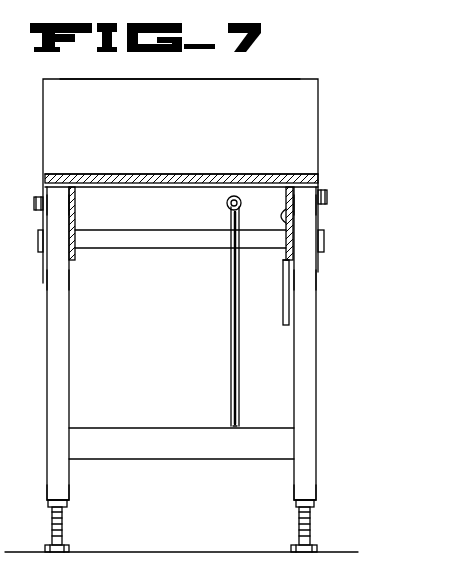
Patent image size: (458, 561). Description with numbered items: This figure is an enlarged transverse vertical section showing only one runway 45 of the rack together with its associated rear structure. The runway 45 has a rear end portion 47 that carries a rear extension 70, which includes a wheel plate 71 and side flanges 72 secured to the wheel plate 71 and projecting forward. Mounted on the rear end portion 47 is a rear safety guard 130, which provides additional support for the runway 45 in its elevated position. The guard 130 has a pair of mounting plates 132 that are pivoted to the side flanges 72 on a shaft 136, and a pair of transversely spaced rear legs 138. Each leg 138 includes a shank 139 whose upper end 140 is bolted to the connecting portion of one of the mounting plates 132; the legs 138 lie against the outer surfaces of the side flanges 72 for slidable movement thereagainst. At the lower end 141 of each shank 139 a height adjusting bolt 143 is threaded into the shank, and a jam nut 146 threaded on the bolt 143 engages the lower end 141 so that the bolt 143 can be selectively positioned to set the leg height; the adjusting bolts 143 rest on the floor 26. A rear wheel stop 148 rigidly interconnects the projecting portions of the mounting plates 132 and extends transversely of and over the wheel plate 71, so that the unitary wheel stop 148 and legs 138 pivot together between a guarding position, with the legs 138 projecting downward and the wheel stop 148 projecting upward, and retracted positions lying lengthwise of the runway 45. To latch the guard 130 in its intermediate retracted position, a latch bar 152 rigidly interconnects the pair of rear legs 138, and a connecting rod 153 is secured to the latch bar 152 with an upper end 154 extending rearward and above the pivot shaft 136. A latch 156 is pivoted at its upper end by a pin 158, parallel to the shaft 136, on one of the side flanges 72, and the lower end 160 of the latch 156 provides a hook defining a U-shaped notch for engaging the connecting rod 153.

The rear safety guard 130 is at (314, 95).
The rear wheel stop 148 is at (190, 108).
The runway 45 is at (269, 172).
The rear extension 70 is at (75, 176).
The rear end portion 47 is at (150, 176).
The wheel plate 71 is at (213, 176).
The mounting plate 132 is at (42, 192).
The upper end 140 is at (57, 204).
The side flange 72 is at (74, 222).
The shank 139 is at (61, 278).
The rear leg 138 is at (66, 357).
The shaft 136 is at (207, 242).
The upper end 154 is at (231, 221).
The connecting rod 153 is at (231, 294).
The pin 158 is at (283, 219).
The latch 156 is at (283, 268).
The lower end 160 is at (288, 323).
The latch bar 152 is at (182, 453).
The lower end 141 is at (65, 490).
The jam nut 146 is at (62, 503).
The height adjusting bolt 143 is at (60, 528).
The floor 26 is at (240, 552).